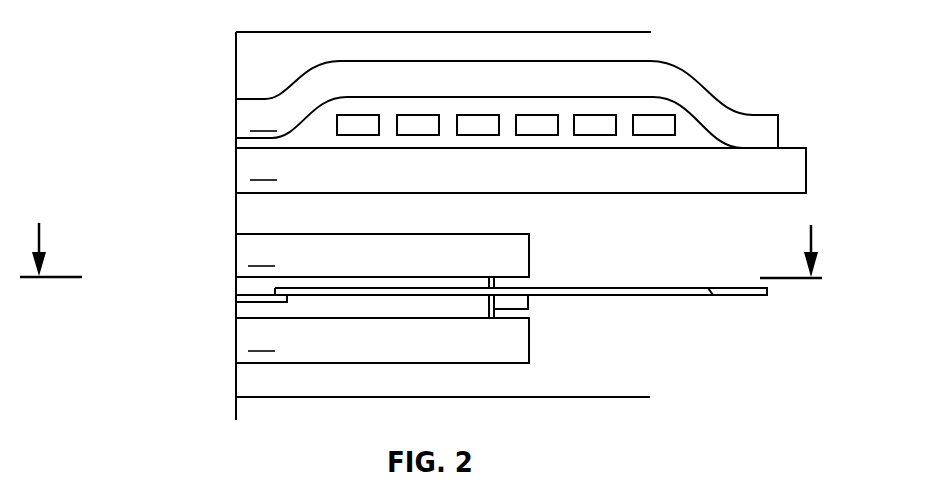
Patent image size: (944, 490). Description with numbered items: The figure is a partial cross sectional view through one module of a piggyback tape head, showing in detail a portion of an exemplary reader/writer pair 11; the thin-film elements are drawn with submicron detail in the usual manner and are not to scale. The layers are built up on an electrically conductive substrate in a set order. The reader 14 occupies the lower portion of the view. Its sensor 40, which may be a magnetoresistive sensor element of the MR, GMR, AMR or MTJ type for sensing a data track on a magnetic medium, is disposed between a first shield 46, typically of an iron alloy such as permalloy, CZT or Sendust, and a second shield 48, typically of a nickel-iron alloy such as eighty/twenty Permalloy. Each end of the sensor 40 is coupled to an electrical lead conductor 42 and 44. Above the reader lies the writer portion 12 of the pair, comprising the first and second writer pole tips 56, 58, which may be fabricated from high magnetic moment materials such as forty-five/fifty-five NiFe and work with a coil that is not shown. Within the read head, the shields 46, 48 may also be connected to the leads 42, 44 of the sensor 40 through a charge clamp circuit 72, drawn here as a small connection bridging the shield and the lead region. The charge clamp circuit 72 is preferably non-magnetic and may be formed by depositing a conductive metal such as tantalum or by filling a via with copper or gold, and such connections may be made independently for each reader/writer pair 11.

The R/W pair 11 is at (106, 79).
The write element 12 is at (152, 82).
The reader 14 is at (152, 233).
The second writer pole tip 58 is at (236, 120).
The first writer pole tip 56 is at (236, 168).
The second shield 48 is at (236, 254).
The first shield 46 is at (236, 338).
The sensor 40 is at (236, 298).
The electrical lead conductor 42 is at (673, 288).
The electrical lead conductor 44 is at (740, 288).
The charge clamp circuit 72 is at (488, 311).